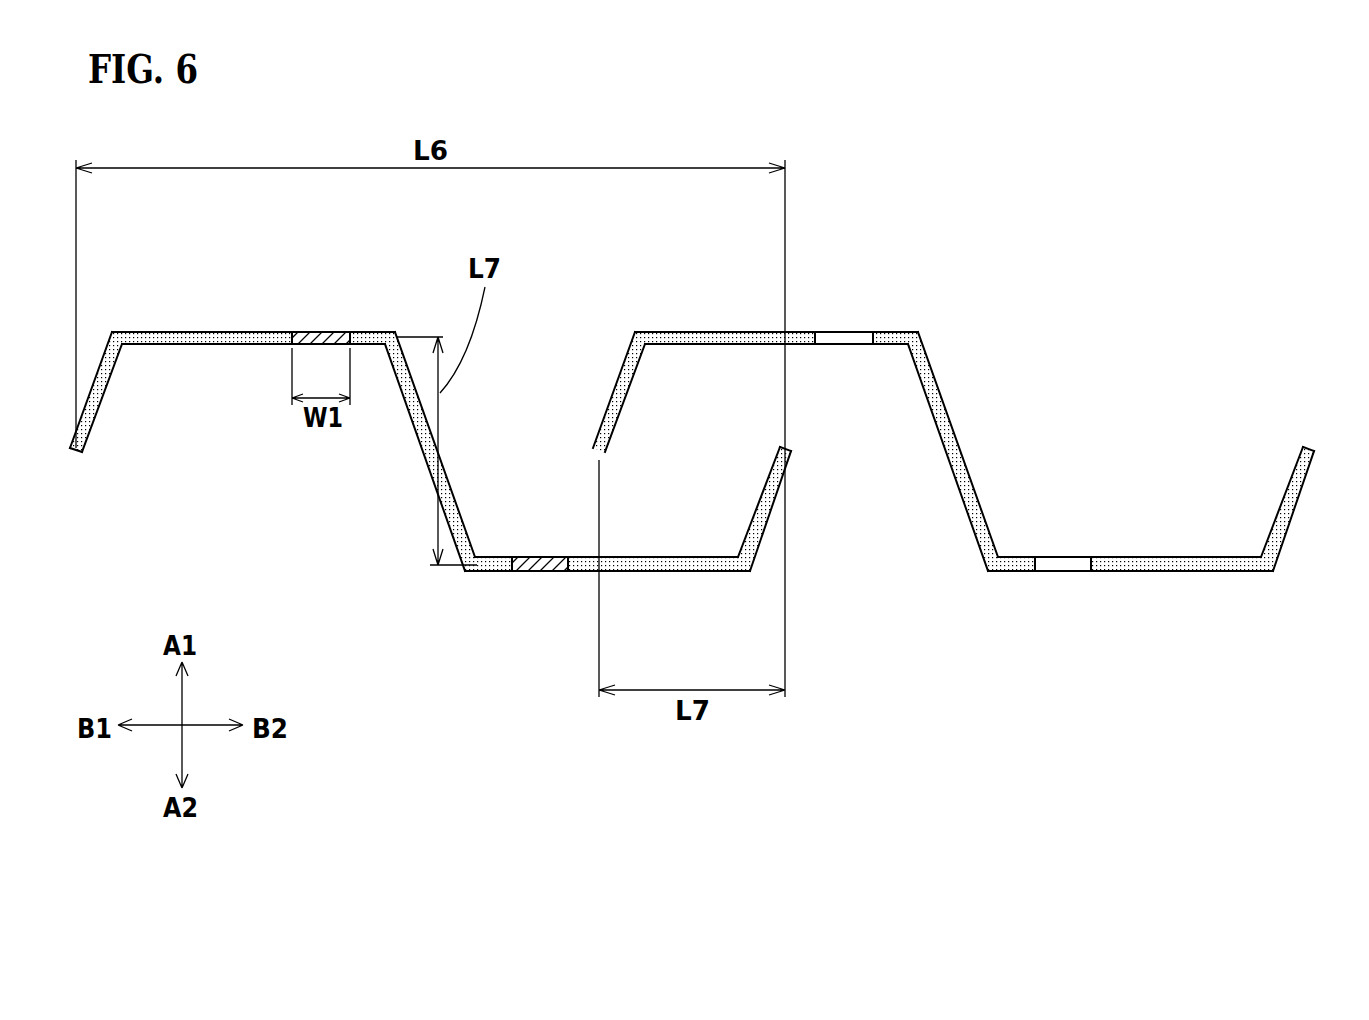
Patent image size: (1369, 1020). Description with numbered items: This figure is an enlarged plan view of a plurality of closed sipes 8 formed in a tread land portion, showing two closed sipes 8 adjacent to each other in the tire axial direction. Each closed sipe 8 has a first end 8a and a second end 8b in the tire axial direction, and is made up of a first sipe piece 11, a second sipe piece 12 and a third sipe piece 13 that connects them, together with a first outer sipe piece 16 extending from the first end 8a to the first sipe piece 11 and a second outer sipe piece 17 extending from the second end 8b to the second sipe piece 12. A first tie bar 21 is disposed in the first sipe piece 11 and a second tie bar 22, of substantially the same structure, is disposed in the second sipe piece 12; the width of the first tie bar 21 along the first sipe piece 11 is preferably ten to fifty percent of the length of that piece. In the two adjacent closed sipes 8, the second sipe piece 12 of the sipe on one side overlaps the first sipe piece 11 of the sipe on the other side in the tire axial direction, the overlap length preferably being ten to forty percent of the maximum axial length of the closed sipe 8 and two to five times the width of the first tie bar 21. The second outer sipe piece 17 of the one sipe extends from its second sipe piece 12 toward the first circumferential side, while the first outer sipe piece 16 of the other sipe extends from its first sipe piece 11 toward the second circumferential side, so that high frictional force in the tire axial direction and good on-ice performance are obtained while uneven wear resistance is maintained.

The closed sipe 8 is at (363, 509).
The first end 8a is at (75, 458).
The second end 8b is at (785, 447).
The first sipe piece 11 is at (225, 340).
The second sipe piece 12 is at (632, 566).
The third sipe piece 13 is at (453, 517).
The first outer sipe piece 16 is at (100, 385).
The second outer sipe piece 17 is at (766, 500).
The first tie bar 21 is at (318, 340).
The second tie bar 22 is at (537, 563).